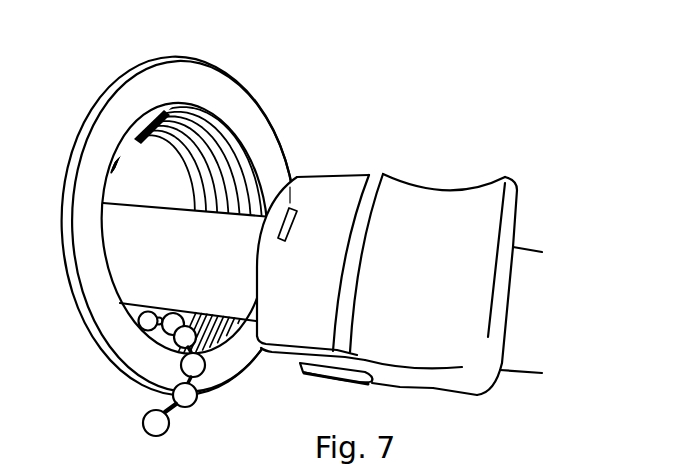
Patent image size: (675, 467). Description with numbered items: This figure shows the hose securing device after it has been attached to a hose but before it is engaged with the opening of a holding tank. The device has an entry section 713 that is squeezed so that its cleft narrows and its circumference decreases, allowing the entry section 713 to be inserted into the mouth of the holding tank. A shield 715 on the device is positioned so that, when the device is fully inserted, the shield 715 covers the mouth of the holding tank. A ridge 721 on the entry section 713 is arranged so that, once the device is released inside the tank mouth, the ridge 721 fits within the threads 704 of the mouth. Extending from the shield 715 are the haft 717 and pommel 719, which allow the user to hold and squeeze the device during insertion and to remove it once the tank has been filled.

The threads 704 is at (195, 138).
The entry section 713 is at (283, 331).
The shield 715 is at (373, 182).
The haft 717 is at (438, 200).
The pommel 719 is at (502, 190).
The ridge 721 is at (310, 177).